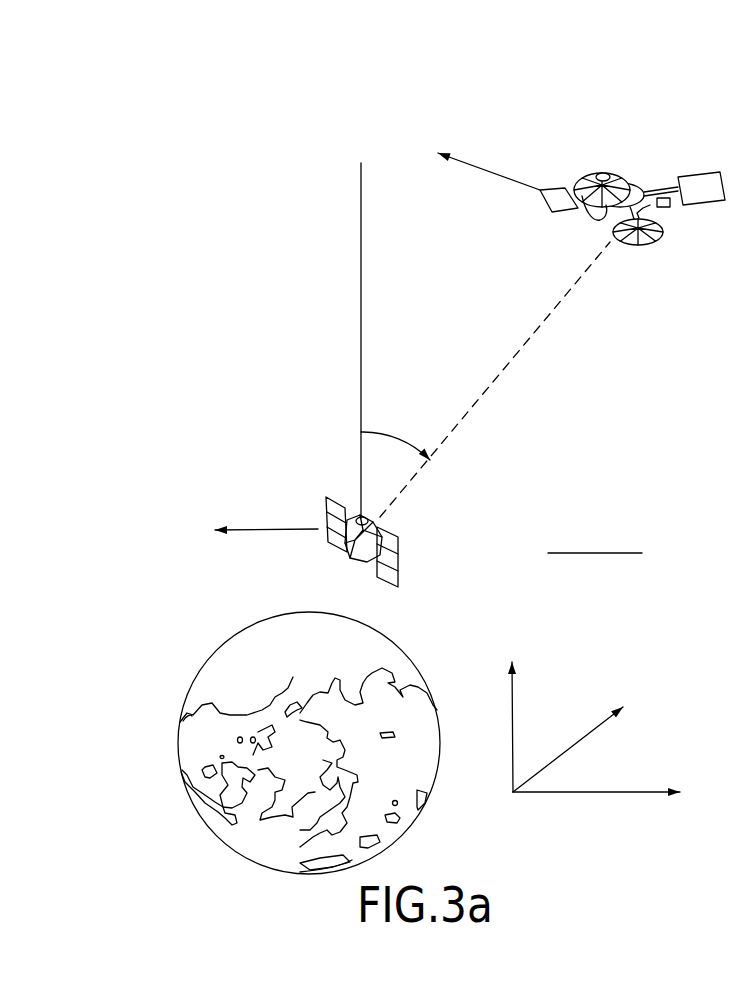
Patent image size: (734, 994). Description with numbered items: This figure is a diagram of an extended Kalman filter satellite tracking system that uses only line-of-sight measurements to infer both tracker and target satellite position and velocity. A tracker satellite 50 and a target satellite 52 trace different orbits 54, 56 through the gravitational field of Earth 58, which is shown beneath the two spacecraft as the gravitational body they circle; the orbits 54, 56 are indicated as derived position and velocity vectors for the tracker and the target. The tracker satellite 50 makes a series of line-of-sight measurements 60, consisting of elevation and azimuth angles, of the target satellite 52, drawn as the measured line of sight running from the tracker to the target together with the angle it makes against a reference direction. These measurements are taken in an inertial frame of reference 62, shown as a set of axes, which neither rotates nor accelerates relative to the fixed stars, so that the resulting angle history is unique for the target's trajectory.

The tracker satellite 50 is at (318, 489).
The target satellite 52 is at (620, 176).
The orbit 54 is at (257, 530).
The orbit 56 is at (480, 172).
The Earth 58 is at (222, 643).
The line-of-sight measurements 60 is at (470, 408).
The inertial frame of reference 62 is at (554, 726).